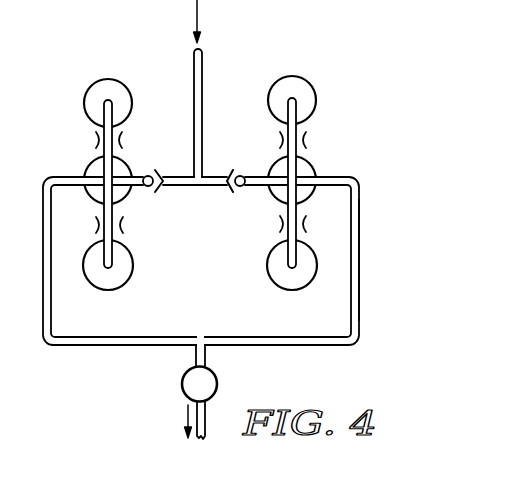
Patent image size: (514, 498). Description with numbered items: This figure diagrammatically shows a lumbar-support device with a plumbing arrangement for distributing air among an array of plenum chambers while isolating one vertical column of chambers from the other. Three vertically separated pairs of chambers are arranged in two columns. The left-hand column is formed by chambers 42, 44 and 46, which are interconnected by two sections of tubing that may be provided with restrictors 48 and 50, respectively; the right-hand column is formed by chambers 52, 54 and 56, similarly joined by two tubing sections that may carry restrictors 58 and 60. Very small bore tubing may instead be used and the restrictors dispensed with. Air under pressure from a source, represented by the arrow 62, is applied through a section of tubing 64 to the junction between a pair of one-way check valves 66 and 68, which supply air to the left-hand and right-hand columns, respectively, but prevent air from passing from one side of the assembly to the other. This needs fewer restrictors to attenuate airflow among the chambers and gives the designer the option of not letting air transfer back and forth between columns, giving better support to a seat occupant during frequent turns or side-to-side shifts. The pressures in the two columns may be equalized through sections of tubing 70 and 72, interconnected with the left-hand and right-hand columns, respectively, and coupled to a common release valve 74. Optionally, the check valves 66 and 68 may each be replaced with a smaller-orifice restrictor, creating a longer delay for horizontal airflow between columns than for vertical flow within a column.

The plenum chamber 42 is at (85, 96).
The plenum chamber 44 is at (86, 166).
The plenum chamber 46 is at (131, 270).
The restrictor 48 is at (96, 138).
The restrictor 50 is at (124, 226).
The plenum chamber 52 is at (314, 105).
The plenum chamber 54 is at (316, 169).
The plenum chamber 56 is at (267, 272).
The restrictor 58 is at (306, 140).
The restrictor 60 is at (282, 226).
The arrow 62 is at (200, 4).
The section of tubing 64 is at (203, 72).
The one-way check valve 66 is at (156, 192).
The one-way check valve 68 is at (240, 188).
The section of tubing 70 is at (42, 252).
The section of tubing 72 is at (359, 233).
The release valve 74 is at (217, 384).